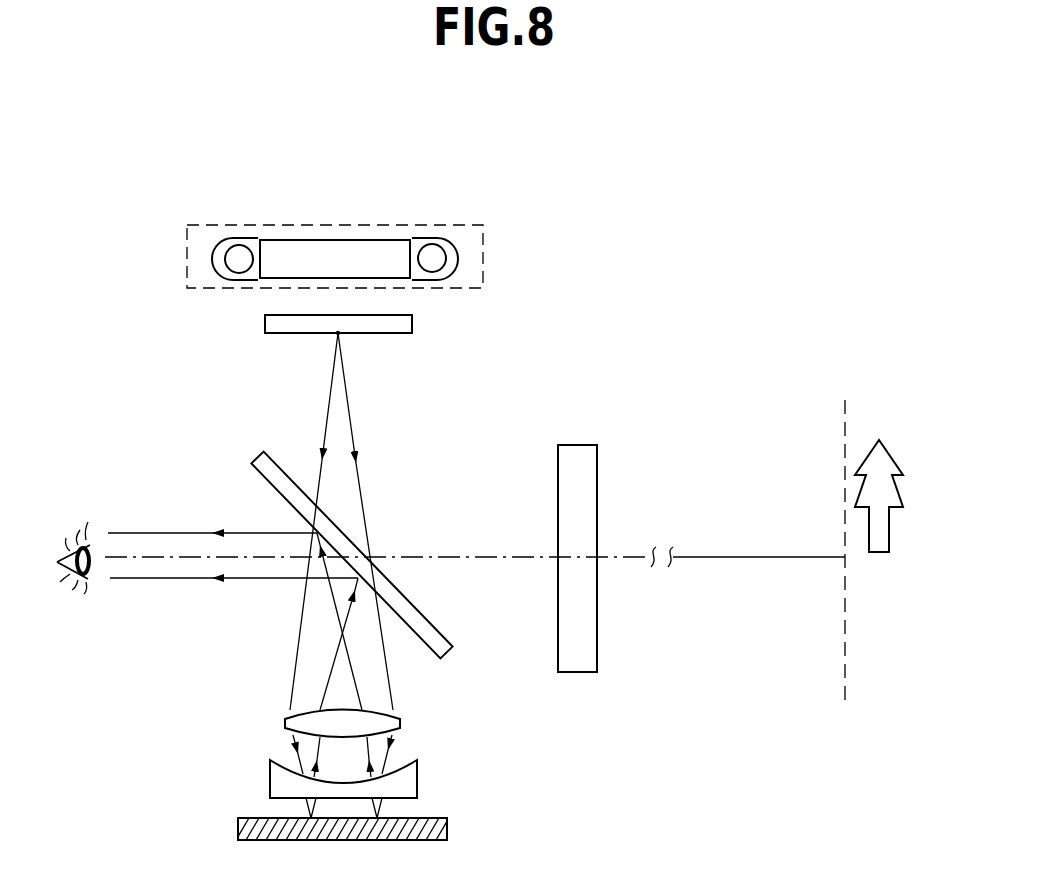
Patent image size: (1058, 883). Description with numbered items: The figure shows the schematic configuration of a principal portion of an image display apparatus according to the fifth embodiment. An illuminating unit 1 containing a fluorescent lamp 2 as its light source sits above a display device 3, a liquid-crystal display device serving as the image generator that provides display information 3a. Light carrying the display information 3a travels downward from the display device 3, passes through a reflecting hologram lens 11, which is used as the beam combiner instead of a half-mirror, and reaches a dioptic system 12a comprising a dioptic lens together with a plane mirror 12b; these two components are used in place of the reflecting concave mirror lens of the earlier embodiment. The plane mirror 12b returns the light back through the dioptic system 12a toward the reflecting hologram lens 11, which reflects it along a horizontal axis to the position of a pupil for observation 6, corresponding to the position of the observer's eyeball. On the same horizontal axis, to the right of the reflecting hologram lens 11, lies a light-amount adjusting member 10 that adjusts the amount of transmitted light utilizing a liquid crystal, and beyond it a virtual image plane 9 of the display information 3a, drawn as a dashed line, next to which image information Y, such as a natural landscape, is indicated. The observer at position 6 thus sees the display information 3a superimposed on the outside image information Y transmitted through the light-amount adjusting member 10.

The illuminating unit 1 is at (483, 225).
The fluorescent lamp 2 is at (431, 246).
The display device 3 is at (412, 321).
The display information 3a is at (380, 335).
The position of a pupil for observation 6 is at (86, 525).
The virtual image plane 9 is at (845, 477).
The light-amount adjusting member 10 is at (575, 672).
The reflecting hologram lens 11 is at (260, 452).
The dioptic system 12a is at (444, 706).
The plane mirror 12b is at (447, 830).
The image information Y is at (890, 450).